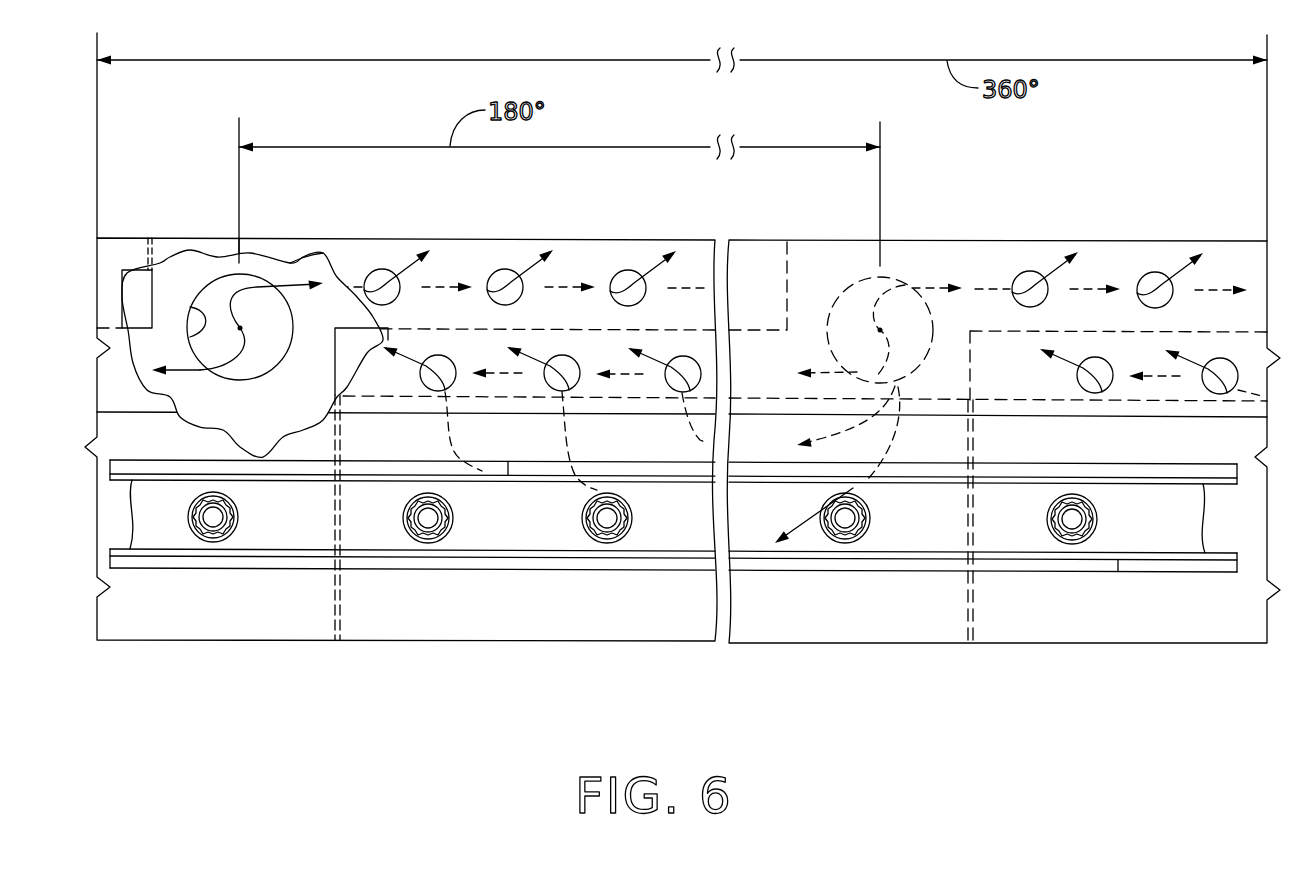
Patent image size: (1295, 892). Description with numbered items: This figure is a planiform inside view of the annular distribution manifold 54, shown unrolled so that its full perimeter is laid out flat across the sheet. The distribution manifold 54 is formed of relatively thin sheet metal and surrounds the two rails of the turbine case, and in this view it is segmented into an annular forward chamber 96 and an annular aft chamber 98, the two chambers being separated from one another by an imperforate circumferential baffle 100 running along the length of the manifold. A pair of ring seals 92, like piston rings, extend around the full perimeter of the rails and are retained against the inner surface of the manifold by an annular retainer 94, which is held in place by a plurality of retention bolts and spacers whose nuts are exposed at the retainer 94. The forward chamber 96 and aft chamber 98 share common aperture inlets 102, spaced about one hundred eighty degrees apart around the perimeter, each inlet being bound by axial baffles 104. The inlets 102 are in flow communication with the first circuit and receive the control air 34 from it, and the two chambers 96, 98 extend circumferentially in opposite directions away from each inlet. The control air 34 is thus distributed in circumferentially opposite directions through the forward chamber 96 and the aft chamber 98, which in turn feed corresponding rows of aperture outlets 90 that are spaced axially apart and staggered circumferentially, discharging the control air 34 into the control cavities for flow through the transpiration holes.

The control air 34 is at (226, 370).
The distribution manifold 54 is at (608, 645).
The aperture outlets 90 is at (562, 363).
The ring seals 92 is at (1012, 463).
The annular retainer 94 is at (937, 534).
The forward chamber 96 is at (298, 268).
The aft chamber 98 is at (247, 437).
The circumferential baffle 100 is at (367, 296).
The aperture inlets 102 is at (190, 336).
The axial baffles 104 is at (154, 246).